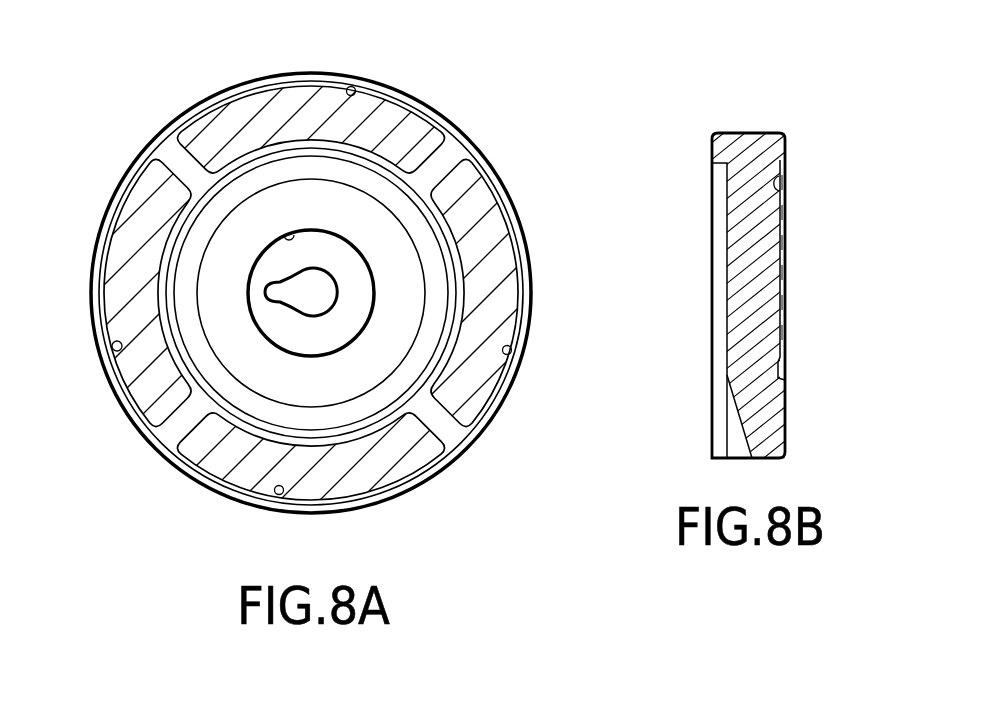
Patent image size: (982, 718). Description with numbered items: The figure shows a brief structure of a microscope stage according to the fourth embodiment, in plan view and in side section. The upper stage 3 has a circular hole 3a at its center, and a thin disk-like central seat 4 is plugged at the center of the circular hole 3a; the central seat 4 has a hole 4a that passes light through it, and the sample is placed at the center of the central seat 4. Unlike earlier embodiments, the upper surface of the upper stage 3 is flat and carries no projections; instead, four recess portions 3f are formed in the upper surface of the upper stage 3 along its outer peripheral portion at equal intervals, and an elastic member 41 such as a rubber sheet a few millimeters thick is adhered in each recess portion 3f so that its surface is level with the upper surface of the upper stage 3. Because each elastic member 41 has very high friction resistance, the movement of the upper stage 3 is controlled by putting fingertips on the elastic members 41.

In FIG. 8A, the upper stage 3 is at (316, 304).
In FIG. 8B, the upper stage 3 is at (758, 147).
In FIG. 8A, the circular hole 3a is at (362, 413).
In FIG. 8A, the recess portions 3f is at (352, 93).
In FIG. 8B, the recess portions 3f is at (783, 172).
In FIG. 8A, the central seat 4 is at (262, 210).
In FIG. 8A, the hole 4a is at (288, 234).
In FIG. 8A, the elastic member 41 is at (407, 125).
In FIG. 8B, the elastic member 41 is at (786, 226).